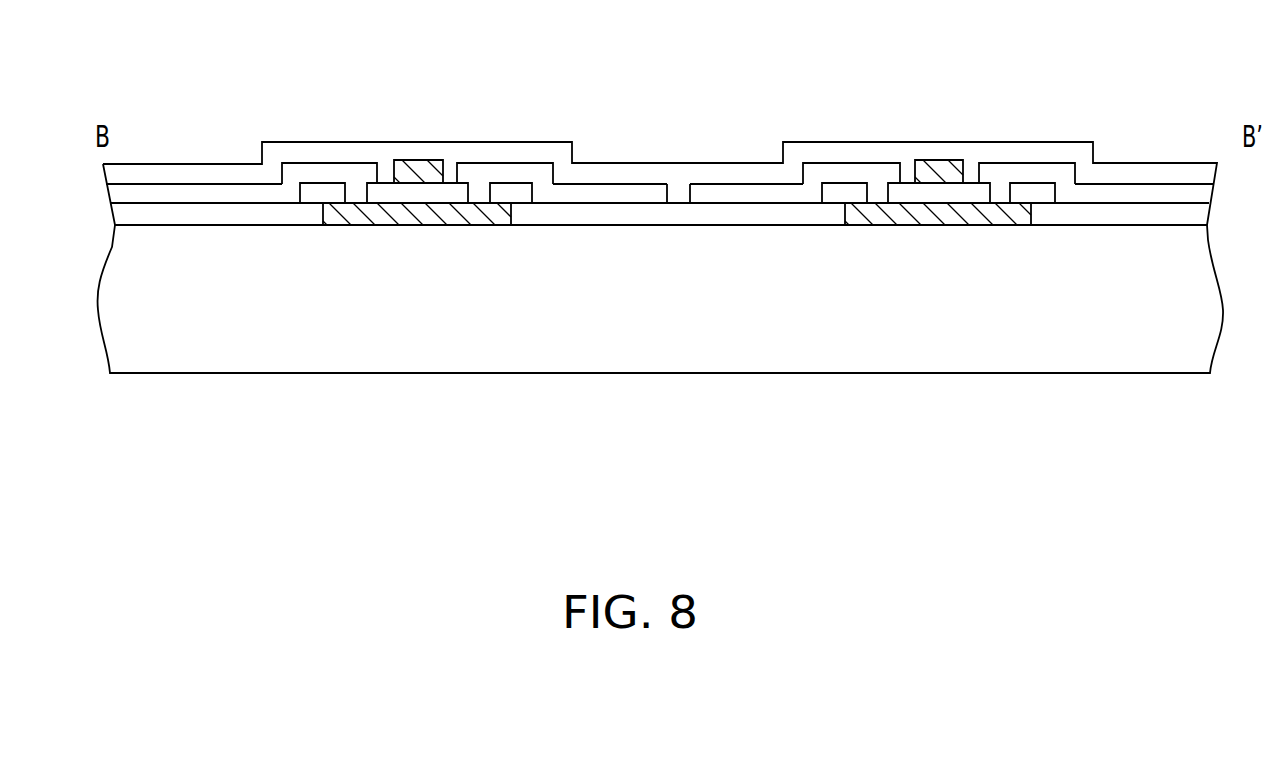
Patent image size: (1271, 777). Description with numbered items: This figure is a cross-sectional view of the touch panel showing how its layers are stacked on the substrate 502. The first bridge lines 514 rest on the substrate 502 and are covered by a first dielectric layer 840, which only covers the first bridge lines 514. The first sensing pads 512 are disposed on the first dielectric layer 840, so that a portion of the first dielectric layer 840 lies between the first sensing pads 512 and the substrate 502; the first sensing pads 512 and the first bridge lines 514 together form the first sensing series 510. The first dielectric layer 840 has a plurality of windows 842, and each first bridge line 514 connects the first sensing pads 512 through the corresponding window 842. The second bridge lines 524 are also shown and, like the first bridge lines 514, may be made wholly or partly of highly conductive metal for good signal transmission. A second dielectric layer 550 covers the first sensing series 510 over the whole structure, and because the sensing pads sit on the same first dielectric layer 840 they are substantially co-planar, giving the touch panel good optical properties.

The substrate 502 is at (1032, 335).
The first sensing series 510 is at (397, 471).
The first sensing pads 512 is at (245, 190).
The first bridge lines 514 is at (387, 226).
The second bridge lines 524 is at (425, 172).
The second dielectric layer 550 is at (177, 177).
The first dielectric layer 840 is at (457, 188).
The windows 842 is at (346, 195).